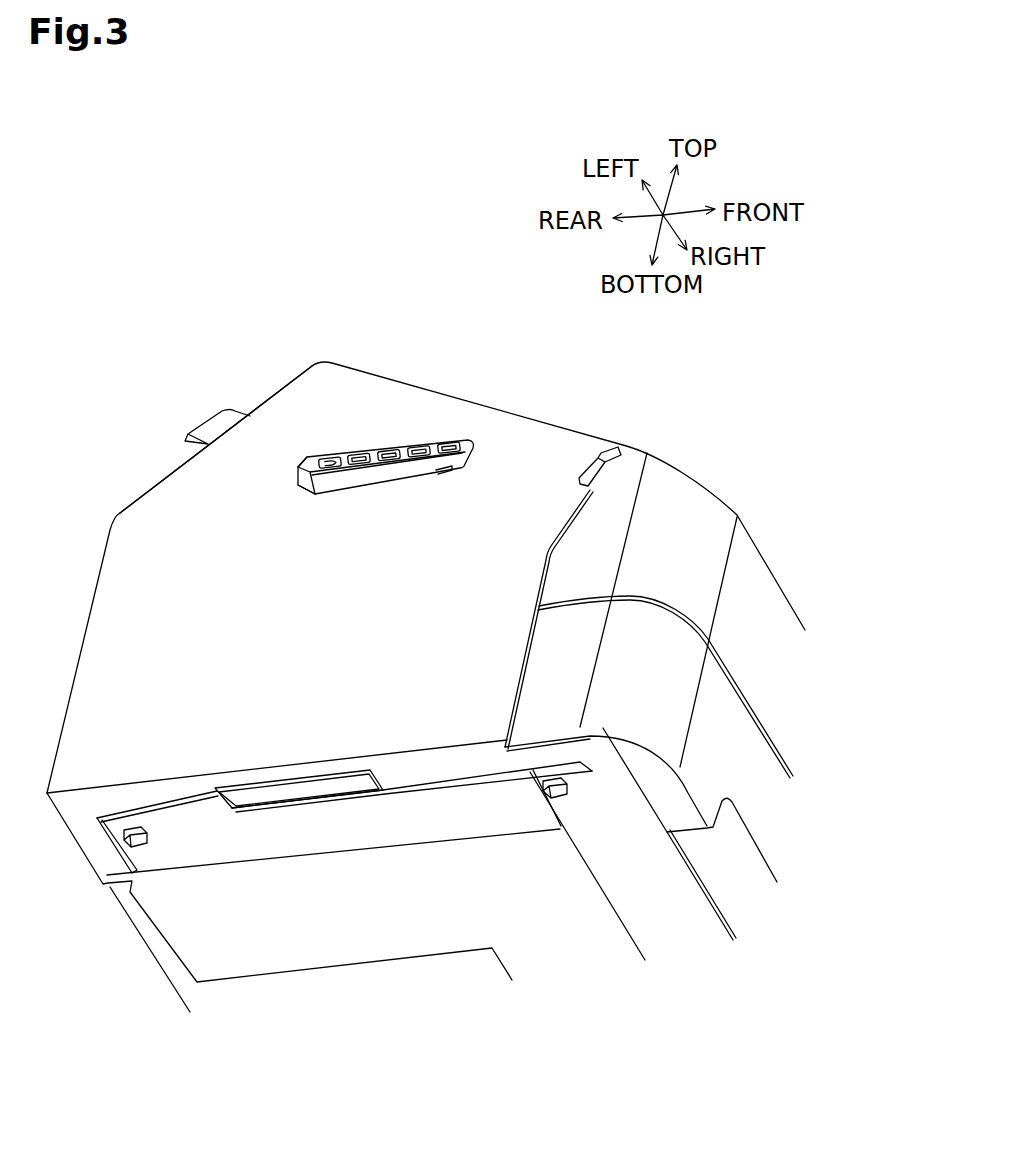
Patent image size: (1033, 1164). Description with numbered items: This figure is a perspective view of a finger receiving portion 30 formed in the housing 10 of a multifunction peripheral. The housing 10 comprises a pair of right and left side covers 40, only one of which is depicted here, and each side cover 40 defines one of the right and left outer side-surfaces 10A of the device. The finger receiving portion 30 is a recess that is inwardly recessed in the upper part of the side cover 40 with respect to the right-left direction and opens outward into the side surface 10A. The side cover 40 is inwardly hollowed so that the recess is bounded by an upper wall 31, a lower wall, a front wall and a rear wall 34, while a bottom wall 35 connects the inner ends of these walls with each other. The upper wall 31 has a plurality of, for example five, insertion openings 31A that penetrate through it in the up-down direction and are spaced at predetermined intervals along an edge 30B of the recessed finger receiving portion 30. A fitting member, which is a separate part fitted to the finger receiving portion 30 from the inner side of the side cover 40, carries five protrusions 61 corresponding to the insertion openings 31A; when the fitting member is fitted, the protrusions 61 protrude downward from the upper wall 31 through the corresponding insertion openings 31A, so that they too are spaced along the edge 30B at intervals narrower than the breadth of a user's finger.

The housing 10 is at (450, 300).
The outer side-surface 10A is at (552, 458).
The finger receiving portion 30 is at (443, 467).
The edge of the recessed finger receiving portion 30B is at (322, 460).
The upper wall 31 is at (407, 461).
The insertion openings 31A is at (443, 444).
The rear wall 34 is at (303, 484).
The bottom wall 35 is at (362, 484).
The side cover 40 is at (158, 466).
The protrusions 61 is at (383, 447).